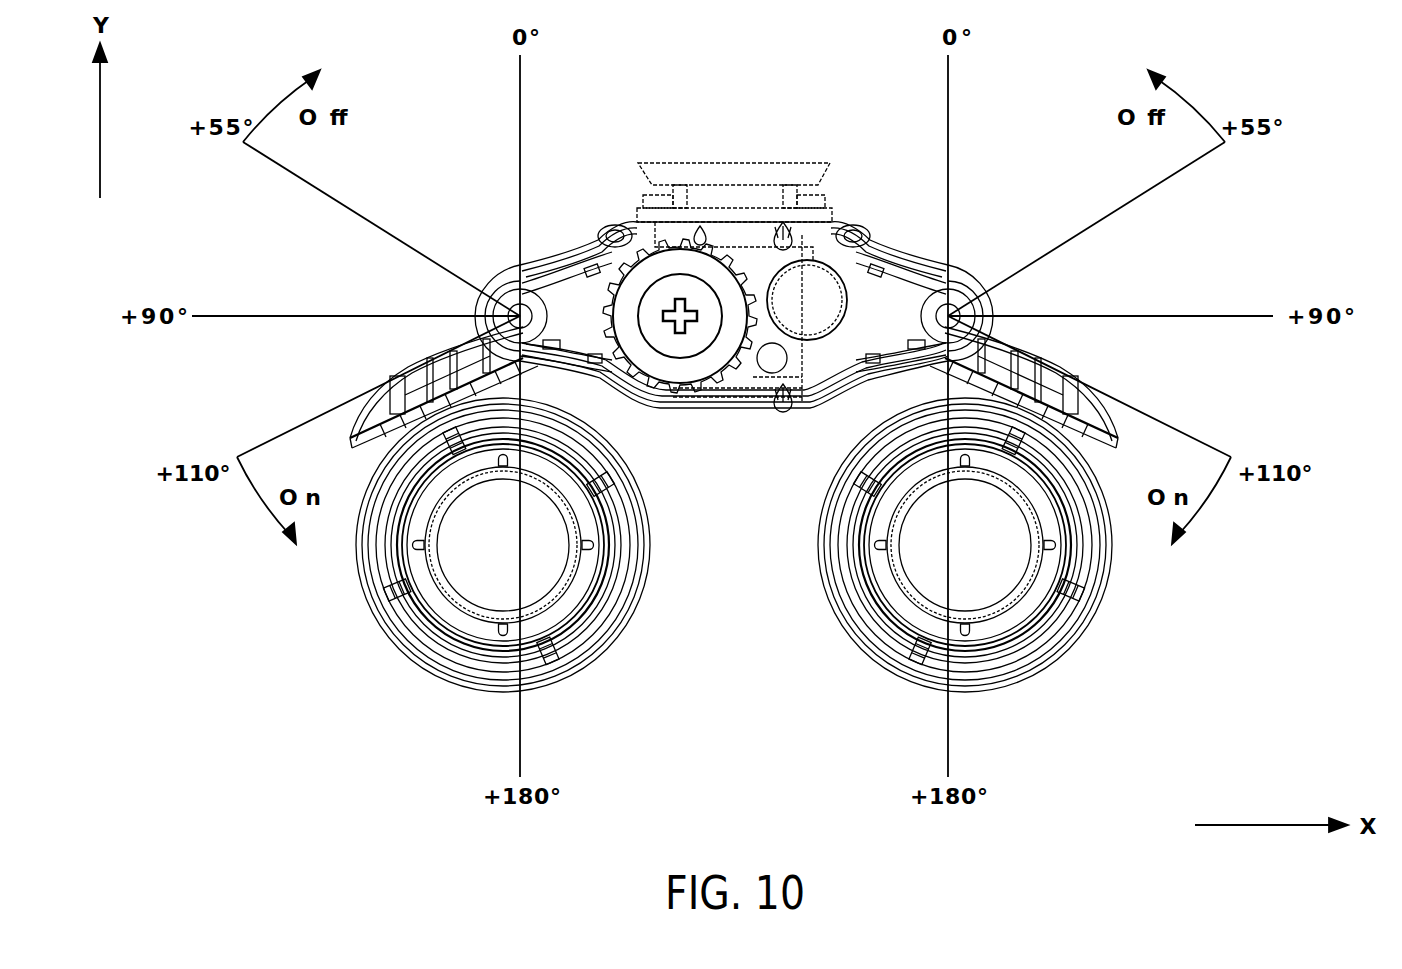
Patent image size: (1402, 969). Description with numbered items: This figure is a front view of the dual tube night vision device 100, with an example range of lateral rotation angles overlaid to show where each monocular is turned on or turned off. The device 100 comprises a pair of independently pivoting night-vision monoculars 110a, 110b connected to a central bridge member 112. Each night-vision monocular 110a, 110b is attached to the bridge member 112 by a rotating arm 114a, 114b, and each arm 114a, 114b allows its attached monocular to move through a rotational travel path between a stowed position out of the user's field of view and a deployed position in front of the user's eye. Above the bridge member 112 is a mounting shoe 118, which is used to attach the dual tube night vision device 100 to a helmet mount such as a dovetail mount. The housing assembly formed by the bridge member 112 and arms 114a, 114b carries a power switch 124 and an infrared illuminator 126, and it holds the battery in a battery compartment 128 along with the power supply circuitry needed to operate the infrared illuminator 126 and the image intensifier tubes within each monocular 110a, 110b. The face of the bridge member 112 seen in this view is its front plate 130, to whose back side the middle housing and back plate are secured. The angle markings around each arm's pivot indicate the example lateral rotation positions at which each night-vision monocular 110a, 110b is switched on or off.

The dual tube night vision device 100 is at (870, 300).
The night-vision monocular 110a is at (1058, 640).
The night-vision monocular 110b is at (417, 649).
The bridge member 112 is at (962, 293).
The rotating arm 114a is at (1050, 380).
The rotating arm 114b is at (387, 392).
The mounting shoe 118 is at (713, 178).
The power switch 124 is at (820, 322).
The infrared illuminator 126 is at (770, 365).
The battery compartment 128 is at (682, 368).
The front plate 130 is at (548, 302).